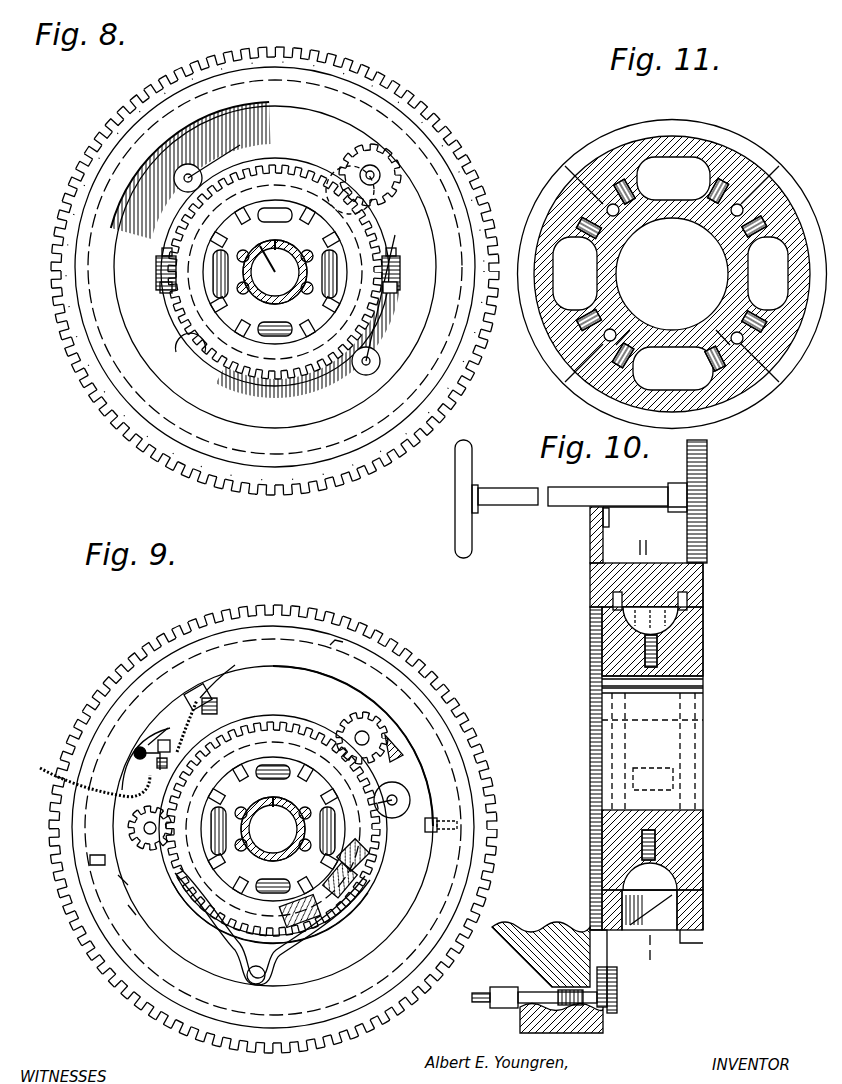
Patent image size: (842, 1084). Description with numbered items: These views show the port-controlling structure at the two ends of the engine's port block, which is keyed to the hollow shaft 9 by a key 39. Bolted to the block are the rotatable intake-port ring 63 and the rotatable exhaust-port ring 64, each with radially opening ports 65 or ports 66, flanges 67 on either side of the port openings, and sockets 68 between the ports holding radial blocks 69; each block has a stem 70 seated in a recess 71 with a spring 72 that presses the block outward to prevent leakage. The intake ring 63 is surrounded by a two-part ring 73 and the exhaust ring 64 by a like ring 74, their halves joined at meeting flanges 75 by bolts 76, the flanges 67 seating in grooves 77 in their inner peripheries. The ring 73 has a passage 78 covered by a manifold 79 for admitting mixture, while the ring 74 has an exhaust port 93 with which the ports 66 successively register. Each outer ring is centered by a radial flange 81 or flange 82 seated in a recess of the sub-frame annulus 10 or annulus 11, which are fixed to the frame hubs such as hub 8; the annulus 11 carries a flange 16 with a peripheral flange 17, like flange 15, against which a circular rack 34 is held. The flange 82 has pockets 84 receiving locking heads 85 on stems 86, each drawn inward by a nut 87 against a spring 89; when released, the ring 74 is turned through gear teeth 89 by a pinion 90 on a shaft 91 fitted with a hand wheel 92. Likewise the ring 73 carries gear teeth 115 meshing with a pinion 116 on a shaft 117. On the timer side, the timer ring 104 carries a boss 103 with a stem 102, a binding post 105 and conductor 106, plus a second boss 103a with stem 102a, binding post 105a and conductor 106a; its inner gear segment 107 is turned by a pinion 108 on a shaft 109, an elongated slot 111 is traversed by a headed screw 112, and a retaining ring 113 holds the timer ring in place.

In FIG. 10, the hub 8 is at (510, 935).
In FIG. 8, the hollow shaft 9 is at (275, 272).
In FIG. 9, the hollow shaft 9 is at (273, 829).
In FIG. 8, the annulus 10 is at (342, 160).
In FIG. 9, the annulus 10 is at (358, 1010).
In FIG. 8, the annulus 11 is at (125, 298).
In FIG. 10, the annulus 11 is at (548, 928).
In FIG. 9, the peripheral flange 15 is at (250, 1025).
In FIG. 8, the flange 16 is at (165, 300).
In FIG. 8, the flange 17 is at (185, 440).
In FIG. 8, the circular rack 34 is at (123, 430).
In FIG. 9, the circular rack 34 is at (150, 1015).
In FIG. 8, the key 39 is at (240, 235).
In FIG. 9, the key 39 is at (273, 829).
In FIG. 8, the rotatable intake-port ring 63 is at (333, 232).
In FIG. 9, the rotatable intake-port ring 63 is at (273, 829).
In FIG. 8, the rotatable exhaust-port ring 64 is at (268, 340).
In FIG. 11, the rotatable exhaust-port ring 64 is at (760, 370).
In FIG. 10, the rotatable exhaust-port ring 64 is at (695, 680).
In FIG. 9, the ports 65 is at (270, 765).
In FIG. 8, the ports 66 is at (311, 238).
In FIG. 11, the ports 66 is at (670, 273).
In FIG. 11, the flanges 67 is at (565, 177).
In FIG. 10, the flanges 67 is at (627, 905).
In FIG. 9, the flanges 67 is at (268, 965).
In FIG. 11, the sockets 68 is at (550, 330).
In FIG. 10, the sockets 68 is at (703, 632).
In FIG. 11, the blocks 69 is at (785, 195).
In FIG. 10, the blocks 69 is at (688, 613).
In FIG. 9, the blocks 69 is at (172, 828).
In FIG. 11, the stem 70 is at (665, 360).
In FIG. 11, the recess 71 is at (615, 322).
In FIG. 10, the recess 71 is at (703, 662).
In FIG. 11, the spring 72 is at (703, 258).
In FIG. 10, the spring 72 is at (648, 650).
In FIG. 9, the ring 73 is at (218, 898).
In FIG. 8, the ring 74 is at (257, 170).
In FIG. 10, the ring 74 is at (590, 585).
In FIG. 8, the meeting flanges 75 is at (158, 270).
In FIG. 8, the bolts 76 is at (398, 292).
In FIG. 10, the bolts 76 is at (652, 751).
In FIG. 10, the grooves 77 is at (620, 607).
In FIG. 9, the port or passage 78 is at (356, 895).
In FIG. 9, the manifold 79 is at (335, 930).
In FIG. 9, the radial peripheral flange 81 is at (370, 670).
In FIG. 8, the flange 82 is at (273, 335).
In FIG. 10, the flange 82 is at (590, 542).
In FIG. 9, the flange 82 is at (273, 829).
In FIG. 8, the recesses or pockets 84 is at (180, 190).
In FIG. 10, the recesses or pockets 84 is at (609, 518).
In FIG. 8, the locking heads 85 is at (203, 178).
In FIG. 10, the locking heads 85 is at (618, 1010).
In FIG. 9, the locking heads 85 is at (410, 797).
In FIG. 8, the stem 86 is at (366, 366).
In FIG. 10, the stem 86 is at (478, 997).
In FIG. 9, the stem 86 is at (410, 801).
In FIG. 10, the nut 87 is at (500, 992).
In FIG. 8, the gear teeth 89 is at (283, 162).
In FIG. 10, the gear teeth 89 is at (704, 553).
In FIG. 8, the pinion 90 is at (388, 155).
In FIG. 10, the pinion 90 is at (708, 465).
In FIG. 8, the shaft 91 is at (385, 170).
In FIG. 10, the shaft 91 is at (503, 490).
In FIG. 10, the hand wheel 92 is at (466, 525).
In FIG. 8, the exhaust port or passage 93 is at (266, 345).
In FIG. 10, the exhaust port or passage 93 is at (667, 917).
In FIG. 9, the stem 102 is at (138, 752).
In FIG. 9, the stem 102a is at (192, 690).
In FIG. 9, the boss 103 is at (125, 780).
In FIG. 9, the boss 103a is at (233, 678).
In FIG. 9, the timer ring 104 is at (420, 690).
In FIG. 9, the binding post 105 is at (140, 752).
In FIG. 9, the binding post 105a is at (218, 705).
In FIG. 9, the conductor 106 is at (60, 780).
In FIG. 9, the conductor 106a is at (160, 740).
In FIG. 9, the gear segment 107 is at (130, 910).
In FIG. 9, the pinion 108 is at (120, 880).
In FIG. 9, the shaft 109 is at (90, 860).
In FIG. 9, the elongated slot 111 is at (478, 845).
In FIG. 9, the headed screw 112 is at (428, 832).
In FIG. 9, the retaining ring 113 is at (338, 640).
In FIG. 9, the gear teeth 115 is at (270, 722).
In FIG. 9, the pinion 116 is at (362, 738).
In FIG. 9, the shaft 117 is at (392, 782).